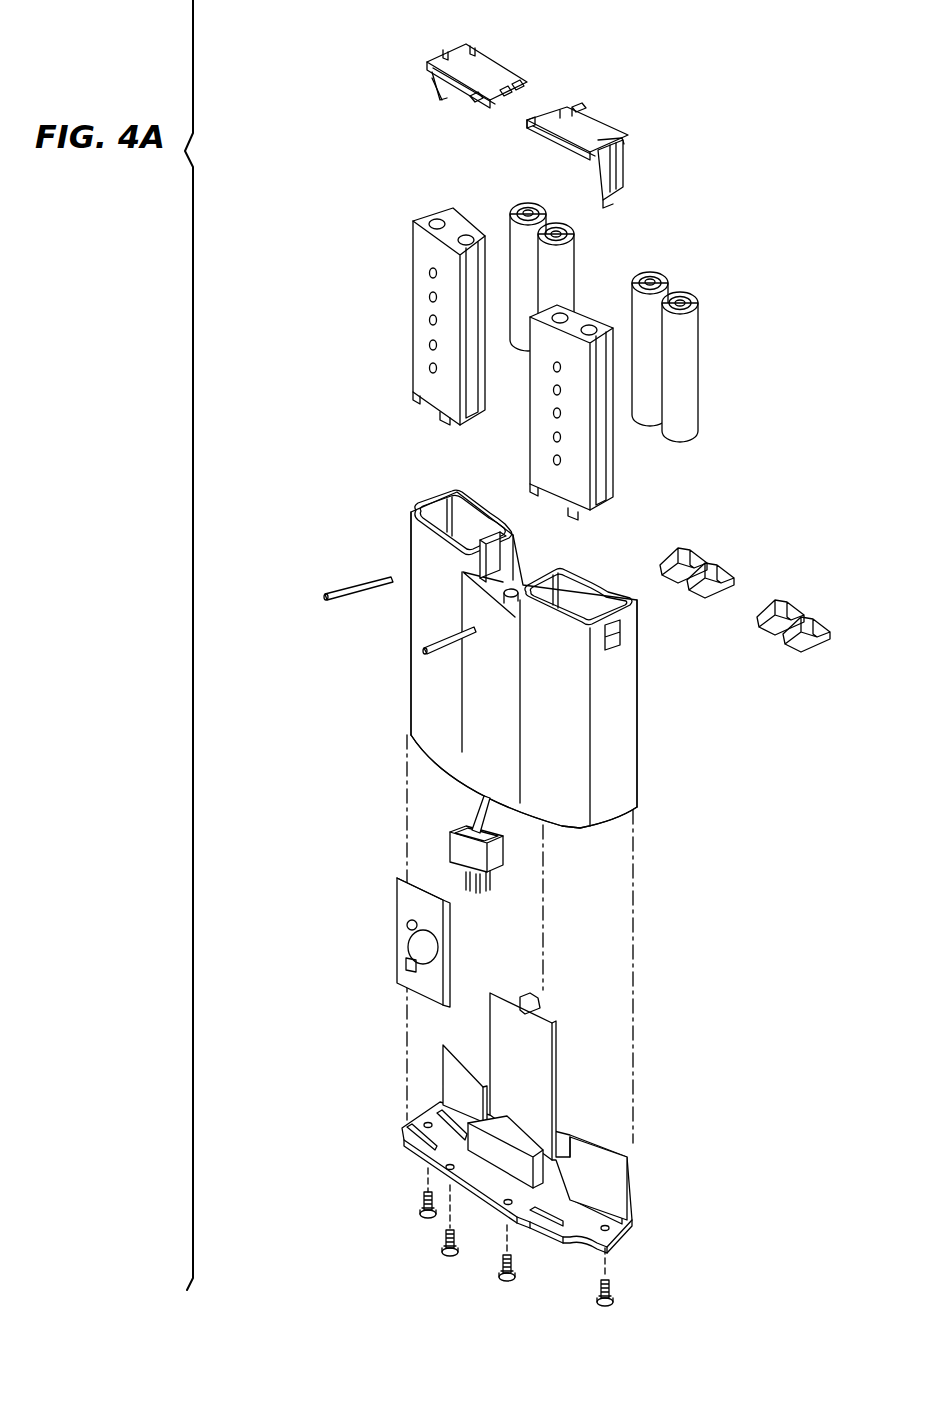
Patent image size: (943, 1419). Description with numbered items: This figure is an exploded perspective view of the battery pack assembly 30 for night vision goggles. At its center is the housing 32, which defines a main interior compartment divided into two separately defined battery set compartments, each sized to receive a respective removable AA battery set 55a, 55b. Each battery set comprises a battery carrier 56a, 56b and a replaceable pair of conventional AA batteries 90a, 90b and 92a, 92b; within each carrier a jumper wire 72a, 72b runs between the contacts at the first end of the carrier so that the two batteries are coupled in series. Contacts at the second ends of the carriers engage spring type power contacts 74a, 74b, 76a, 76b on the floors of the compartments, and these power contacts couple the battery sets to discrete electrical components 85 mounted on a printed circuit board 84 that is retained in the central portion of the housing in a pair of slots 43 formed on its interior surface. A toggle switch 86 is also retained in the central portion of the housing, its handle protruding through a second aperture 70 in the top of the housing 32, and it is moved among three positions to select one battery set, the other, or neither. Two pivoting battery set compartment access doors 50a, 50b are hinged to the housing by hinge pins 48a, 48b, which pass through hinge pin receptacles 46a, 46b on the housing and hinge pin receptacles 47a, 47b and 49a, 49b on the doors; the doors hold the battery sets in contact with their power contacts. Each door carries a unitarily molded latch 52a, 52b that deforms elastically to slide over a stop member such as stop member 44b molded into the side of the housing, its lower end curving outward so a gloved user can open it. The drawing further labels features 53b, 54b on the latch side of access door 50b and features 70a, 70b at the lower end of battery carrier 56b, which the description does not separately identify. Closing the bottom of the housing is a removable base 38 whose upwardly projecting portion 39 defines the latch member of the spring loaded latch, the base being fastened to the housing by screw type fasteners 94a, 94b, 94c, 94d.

The battery pack assembly 30 is at (296, 462).
The housing 32 is at (425, 710).
The removable base 38 is at (633, 1220).
The upwardly projecting portion 39 is at (557, 1048).
The slots 43 is at (445, 1100).
The stop member 44b is at (617, 650).
The hinge pin receptacle 46a is at (490, 527).
The hinge pin receptacle 46b is at (557, 570).
The hinge pin receptacle 47a is at (477, 103).
The hinge pin receptacle 47b is at (522, 78).
The hinge pin 48a is at (343, 580).
The hinge pin 48b is at (420, 640).
The hinge pin receptacle 49a is at (527, 125).
The hinge pin receptacle 49b is at (578, 107).
The battery set compartment access door 50a is at (448, 48).
The battery set compartment access door 50b is at (600, 118).
The latch 52a is at (432, 88).
The latch 52b is at (623, 177).
The foot 53b is at (620, 200).
The tab 54b is at (623, 147).
The removable AA battery set 55a is at (392, 316).
The removable AA battery set 55b is at (518, 438).
The battery carrier 56a is at (414, 350).
The battery carrier 56b is at (602, 450).
The second aperture 70 is at (507, 598).
The tab 70a is at (573, 514).
The tab 70b is at (538, 492).
The jumper wire 72a is at (443, 418).
The jumper wire 72b is at (413, 400).
The power contact 74a is at (720, 570).
The power contact 74b is at (698, 557).
The power contact 76a is at (787, 648).
The power contact 76b is at (765, 630).
The printed circuit board 84 is at (397, 912).
The discrete electrical components 85 is at (407, 963).
The toggle switch 86 is at (453, 836).
The AA battery 90a is at (698, 373).
The AA battery 90b is at (664, 277).
The AA battery 92a is at (577, 260).
The AA battery 92b is at (513, 202).
The screw type fastener 94a is at (422, 1200).
The screw type fastener 94b is at (442, 1240).
The screw type fastener 94c is at (498, 1265).
The screw type fastener 94d is at (612, 1282).